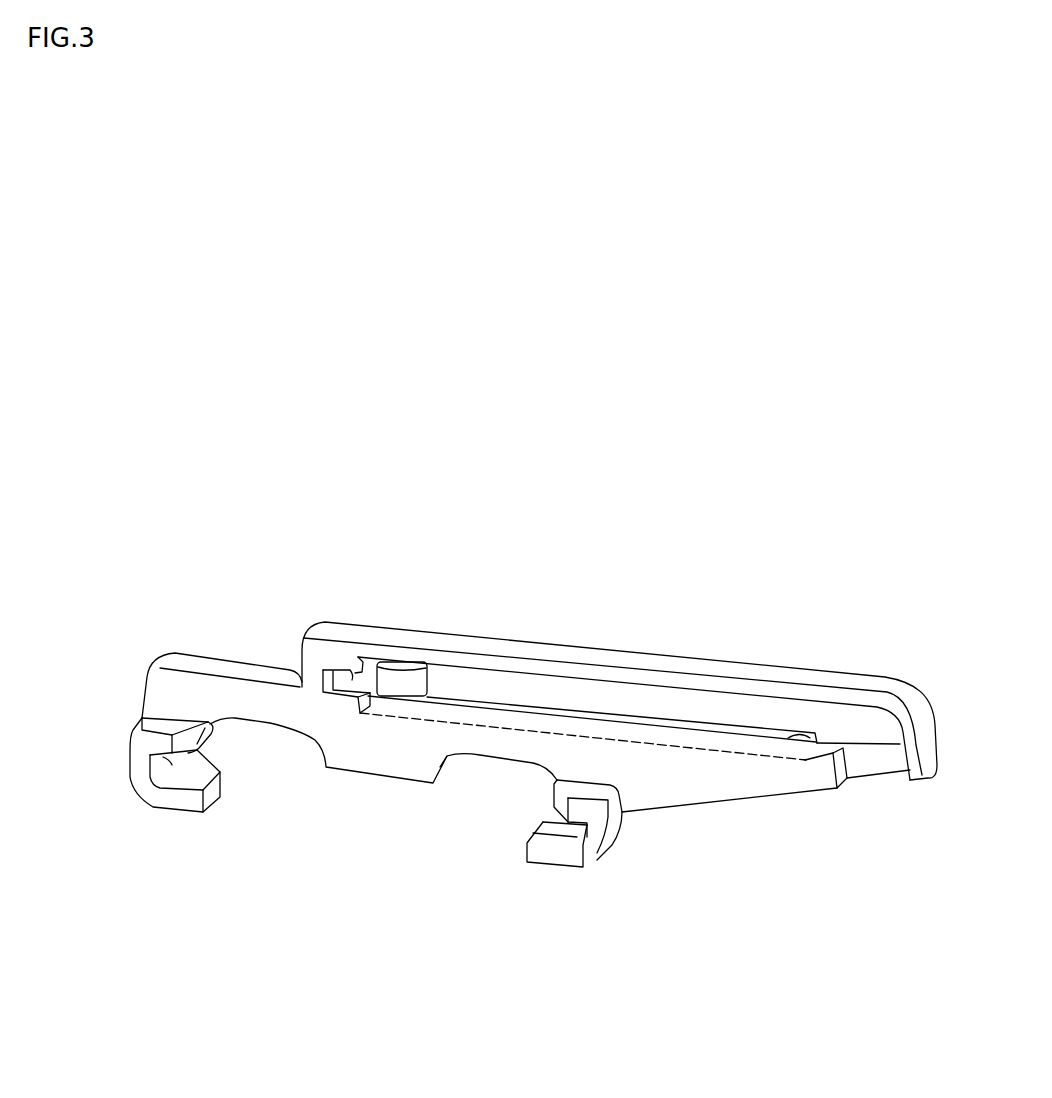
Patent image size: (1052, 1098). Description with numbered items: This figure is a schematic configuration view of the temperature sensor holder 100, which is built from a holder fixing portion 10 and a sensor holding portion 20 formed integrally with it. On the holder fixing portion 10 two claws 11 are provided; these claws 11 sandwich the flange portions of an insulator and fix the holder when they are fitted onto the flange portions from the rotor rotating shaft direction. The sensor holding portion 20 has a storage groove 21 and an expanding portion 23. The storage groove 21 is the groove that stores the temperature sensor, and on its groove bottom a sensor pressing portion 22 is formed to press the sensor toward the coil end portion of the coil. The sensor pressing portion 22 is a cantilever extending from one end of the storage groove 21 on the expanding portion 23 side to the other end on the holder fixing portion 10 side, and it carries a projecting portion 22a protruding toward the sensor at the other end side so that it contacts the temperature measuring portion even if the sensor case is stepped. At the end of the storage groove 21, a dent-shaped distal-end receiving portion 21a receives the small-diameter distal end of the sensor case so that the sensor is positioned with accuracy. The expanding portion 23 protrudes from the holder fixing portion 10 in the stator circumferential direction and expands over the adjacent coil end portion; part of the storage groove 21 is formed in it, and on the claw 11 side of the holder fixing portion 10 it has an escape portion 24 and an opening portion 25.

The temperature sensor holder 100 is at (662, 526).
The holder fixing portion 10 is at (247, 867).
The claws 11 is at (147, 806).
The sensor holding portion 20 is at (770, 637).
The storage groove 21 is at (781, 740).
The distal-end receiving portion 21a is at (350, 673).
The sensor pressing portion 22 is at (780, 713).
The projecting portion 22a is at (403, 677).
The expanding portion 23 is at (830, 762).
The escape portion 24 is at (693, 810).
The opening portion 25 is at (882, 763).